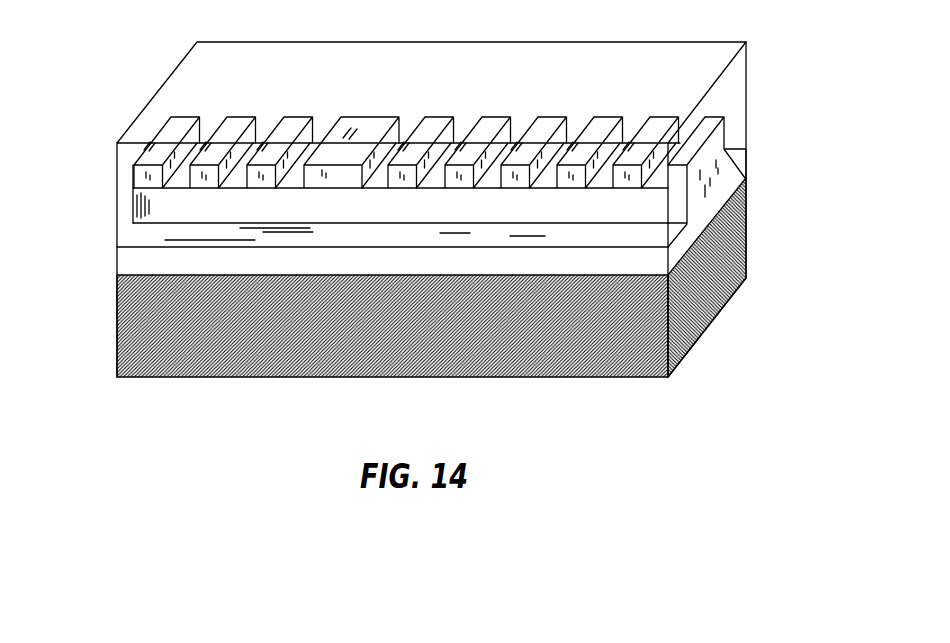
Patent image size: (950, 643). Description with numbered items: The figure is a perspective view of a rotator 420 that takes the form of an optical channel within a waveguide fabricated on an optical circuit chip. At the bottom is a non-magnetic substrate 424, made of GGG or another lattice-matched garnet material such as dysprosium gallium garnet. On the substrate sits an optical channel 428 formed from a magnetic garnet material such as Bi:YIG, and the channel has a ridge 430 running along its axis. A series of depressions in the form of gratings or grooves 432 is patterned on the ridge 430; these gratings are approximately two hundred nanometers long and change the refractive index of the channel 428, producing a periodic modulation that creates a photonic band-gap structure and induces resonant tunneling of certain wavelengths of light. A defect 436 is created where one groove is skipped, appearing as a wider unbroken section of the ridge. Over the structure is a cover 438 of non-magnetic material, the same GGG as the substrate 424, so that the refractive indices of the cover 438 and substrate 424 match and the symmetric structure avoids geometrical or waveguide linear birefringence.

The rotator 420 is at (188, 441).
The non-magnetic substrate 424 is at (738, 238).
The optical channel 428 is at (740, 170).
The ridge 430 is at (707, 167).
The gratings 432 is at (293, 182).
The defect 436 is at (368, 118).
The cover 438 is at (677, 42).